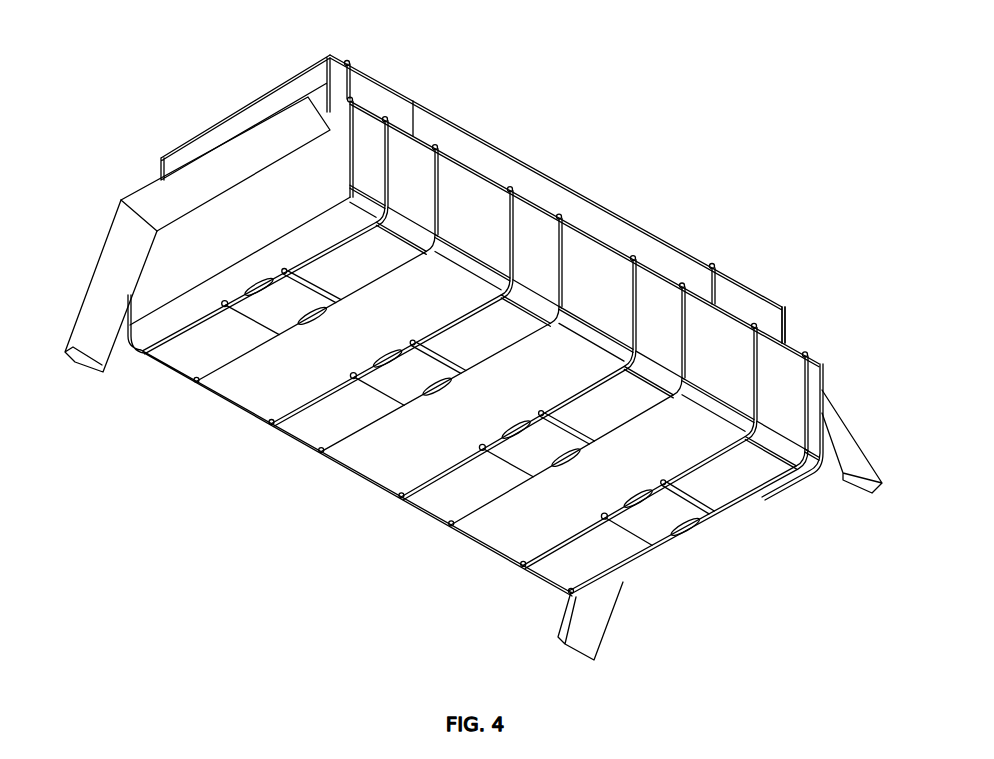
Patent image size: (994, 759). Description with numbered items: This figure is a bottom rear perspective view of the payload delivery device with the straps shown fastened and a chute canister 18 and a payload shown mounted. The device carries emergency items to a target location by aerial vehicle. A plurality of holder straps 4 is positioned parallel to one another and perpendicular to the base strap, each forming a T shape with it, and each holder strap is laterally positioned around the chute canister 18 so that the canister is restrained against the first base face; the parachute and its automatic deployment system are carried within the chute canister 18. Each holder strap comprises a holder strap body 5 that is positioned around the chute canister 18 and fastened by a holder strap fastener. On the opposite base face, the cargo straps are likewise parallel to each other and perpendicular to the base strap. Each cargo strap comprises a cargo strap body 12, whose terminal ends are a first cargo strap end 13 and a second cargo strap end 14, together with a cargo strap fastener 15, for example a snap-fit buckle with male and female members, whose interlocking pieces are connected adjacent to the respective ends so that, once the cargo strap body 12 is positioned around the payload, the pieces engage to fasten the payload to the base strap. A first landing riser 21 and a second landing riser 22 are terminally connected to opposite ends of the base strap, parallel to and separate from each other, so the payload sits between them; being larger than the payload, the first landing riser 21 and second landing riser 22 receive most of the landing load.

The plurality of holder straps 4 is at (401, 73).
The holder strap body 5 is at (418, 100).
The cargo strap body 12 is at (302, 409).
The first cargo strap end 13 is at (426, 340).
The second cargo strap end 14 is at (352, 381).
The cargo strap fastener 15 is at (388, 352).
The chute canister 18 is at (573, 197).
The first landing riser 21 is at (857, 447).
The second landing riser 22 is at (95, 272).